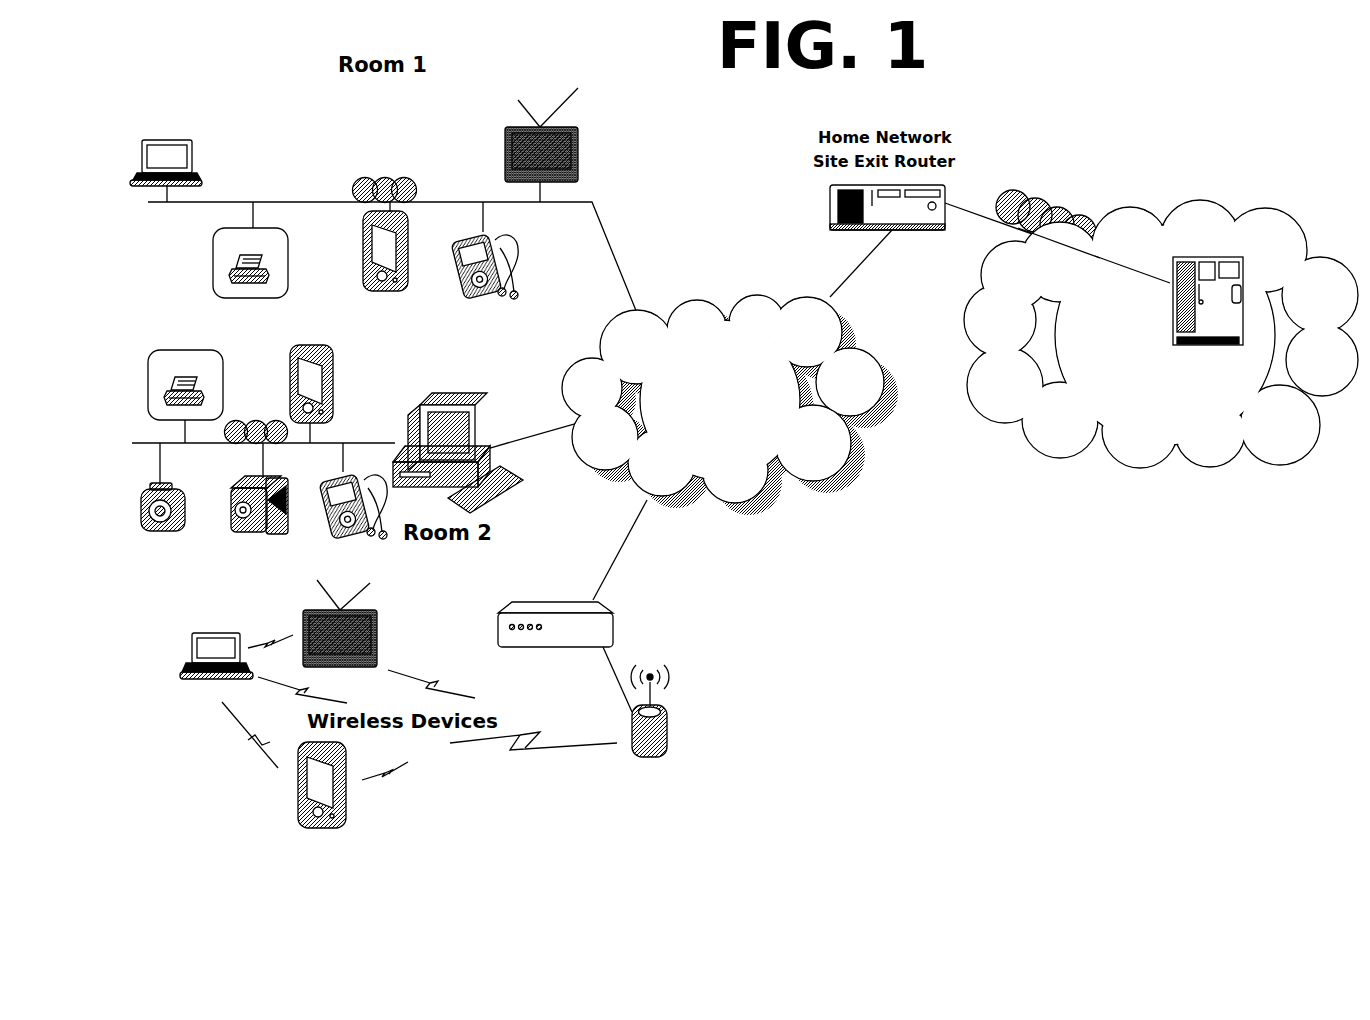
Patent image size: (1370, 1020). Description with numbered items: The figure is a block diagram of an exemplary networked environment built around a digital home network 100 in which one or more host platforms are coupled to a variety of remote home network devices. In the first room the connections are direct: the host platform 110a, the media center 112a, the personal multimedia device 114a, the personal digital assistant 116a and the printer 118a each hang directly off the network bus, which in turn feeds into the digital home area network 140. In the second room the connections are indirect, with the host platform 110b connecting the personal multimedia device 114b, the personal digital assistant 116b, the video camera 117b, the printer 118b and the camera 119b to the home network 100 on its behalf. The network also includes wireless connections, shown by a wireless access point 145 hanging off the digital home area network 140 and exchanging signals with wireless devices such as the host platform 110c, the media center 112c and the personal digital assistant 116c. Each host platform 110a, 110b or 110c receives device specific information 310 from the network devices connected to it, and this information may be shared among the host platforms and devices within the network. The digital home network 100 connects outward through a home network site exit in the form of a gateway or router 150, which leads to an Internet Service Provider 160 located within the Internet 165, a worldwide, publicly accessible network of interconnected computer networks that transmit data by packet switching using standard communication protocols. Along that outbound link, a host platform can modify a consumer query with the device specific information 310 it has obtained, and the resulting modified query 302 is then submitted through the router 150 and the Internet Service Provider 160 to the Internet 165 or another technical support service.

The digital home network 100 is at (728, 140).
The host platform 110a is at (150, 136).
The host platform 110b is at (403, 407).
The host platform 110c is at (190, 655).
The media center 112a is at (565, 110).
The media center 112c is at (377, 636).
The personal multimedia device 114a is at (485, 298).
The personal multimedia device 114b is at (343, 537).
The personal digital assistant 116a is at (362, 258).
The personal digital assistant 116b is at (325, 352).
The personal digital assistant 116c is at (308, 820).
The video camera 117b is at (265, 540).
The printer 118a is at (212, 256).
The printer 118b is at (247, 361).
The camera 119b is at (163, 538).
The digital home area network 140 is at (734, 444).
The wireless access point 145 is at (667, 737).
The router 150 is at (830, 200).
The Internet Service Provider 160 is at (1243, 297).
The Internet 165 is at (1105, 414).
The modified query 302 is at (1062, 198).
The device specific information 310 is at (378, 178).